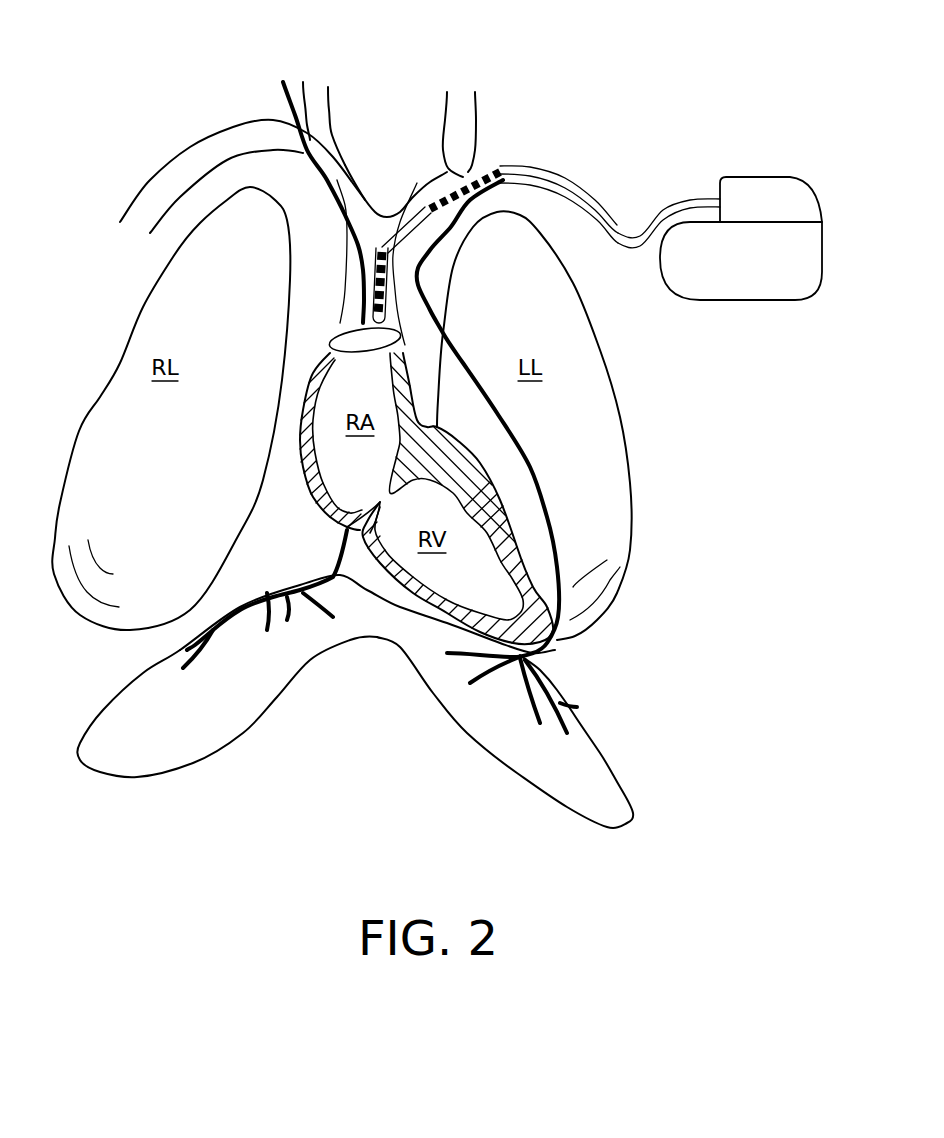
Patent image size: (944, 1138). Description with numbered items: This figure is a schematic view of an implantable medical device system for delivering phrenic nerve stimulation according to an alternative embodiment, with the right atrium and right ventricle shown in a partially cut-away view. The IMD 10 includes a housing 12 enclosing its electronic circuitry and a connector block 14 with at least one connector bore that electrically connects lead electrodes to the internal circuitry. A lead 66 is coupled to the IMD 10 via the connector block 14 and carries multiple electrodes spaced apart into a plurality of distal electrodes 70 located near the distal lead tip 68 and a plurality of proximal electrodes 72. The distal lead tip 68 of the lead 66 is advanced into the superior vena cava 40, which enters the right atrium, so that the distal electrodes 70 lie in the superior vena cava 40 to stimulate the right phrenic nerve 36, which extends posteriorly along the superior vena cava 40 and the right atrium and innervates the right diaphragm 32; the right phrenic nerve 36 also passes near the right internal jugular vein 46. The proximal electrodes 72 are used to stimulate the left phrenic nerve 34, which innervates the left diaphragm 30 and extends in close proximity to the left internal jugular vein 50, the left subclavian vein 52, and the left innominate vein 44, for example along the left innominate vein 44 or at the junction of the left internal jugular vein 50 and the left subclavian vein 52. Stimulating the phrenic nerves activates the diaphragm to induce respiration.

The implantable medical device 10 is at (733, 214).
The housing 12 is at (740, 303).
The connector block 14 is at (817, 207).
The left diaphragm 30 is at (602, 797).
The right diaphragm 32 is at (122, 750).
The left phrenic nerve 34 is at (475, 145).
The right phrenic nerve 36 is at (273, 91).
The superior vena cava 40 is at (340, 290).
The left innominate vein 44 is at (395, 213).
The right internal jugular vein 46 is at (330, 95).
The left internal jugular vein 50 is at (447, 102).
The left subclavian vein 52 is at (593, 197).
The lead 66 is at (653, 223).
The distal lead tip 68 is at (397, 343).
The distal electrodes 70 is at (370, 287).
The proximal electrodes 72 is at (433, 203).